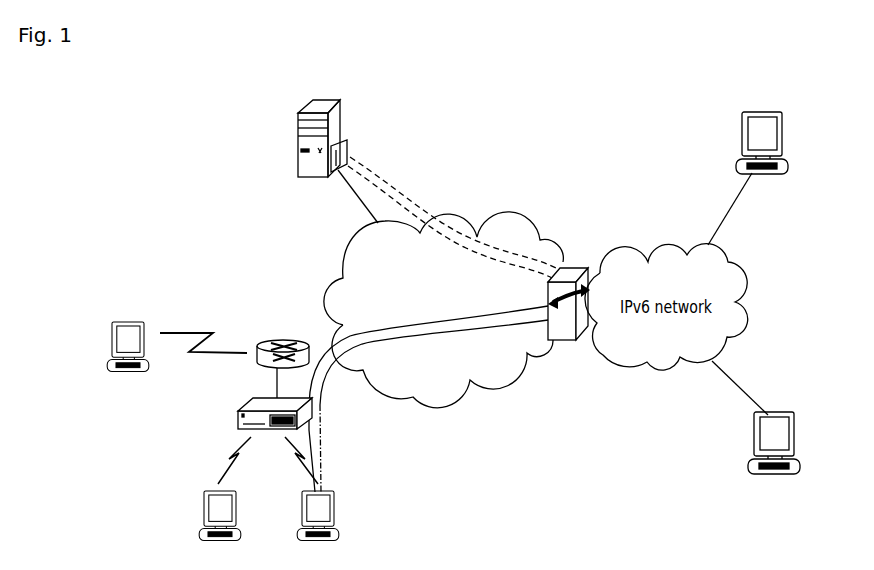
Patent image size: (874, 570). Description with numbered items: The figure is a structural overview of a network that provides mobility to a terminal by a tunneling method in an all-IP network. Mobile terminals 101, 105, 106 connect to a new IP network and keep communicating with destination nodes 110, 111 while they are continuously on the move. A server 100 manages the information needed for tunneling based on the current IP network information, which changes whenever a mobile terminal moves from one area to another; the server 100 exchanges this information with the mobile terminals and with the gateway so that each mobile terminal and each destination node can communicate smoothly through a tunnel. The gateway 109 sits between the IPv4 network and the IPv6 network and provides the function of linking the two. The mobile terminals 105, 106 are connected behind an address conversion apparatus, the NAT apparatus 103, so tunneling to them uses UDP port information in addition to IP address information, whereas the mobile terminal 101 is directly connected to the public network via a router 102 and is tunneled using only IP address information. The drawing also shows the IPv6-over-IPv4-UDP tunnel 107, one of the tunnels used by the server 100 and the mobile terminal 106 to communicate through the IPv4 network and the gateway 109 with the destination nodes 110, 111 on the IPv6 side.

The server 100 is at (298, 122).
The mobile terminal 101 is at (112, 340).
The router 102 is at (262, 341).
The NAT apparatus 103 is at (238, 420).
The mobile terminal 105 is at (204, 510).
The mobile terminal 106 is at (336, 508).
The IPv6-over-IPv4-UDP tunnel 107 is at (480, 234).
The gateway 109 is at (572, 266).
The destination node 110 is at (782, 128).
The destination node 111 is at (795, 432).